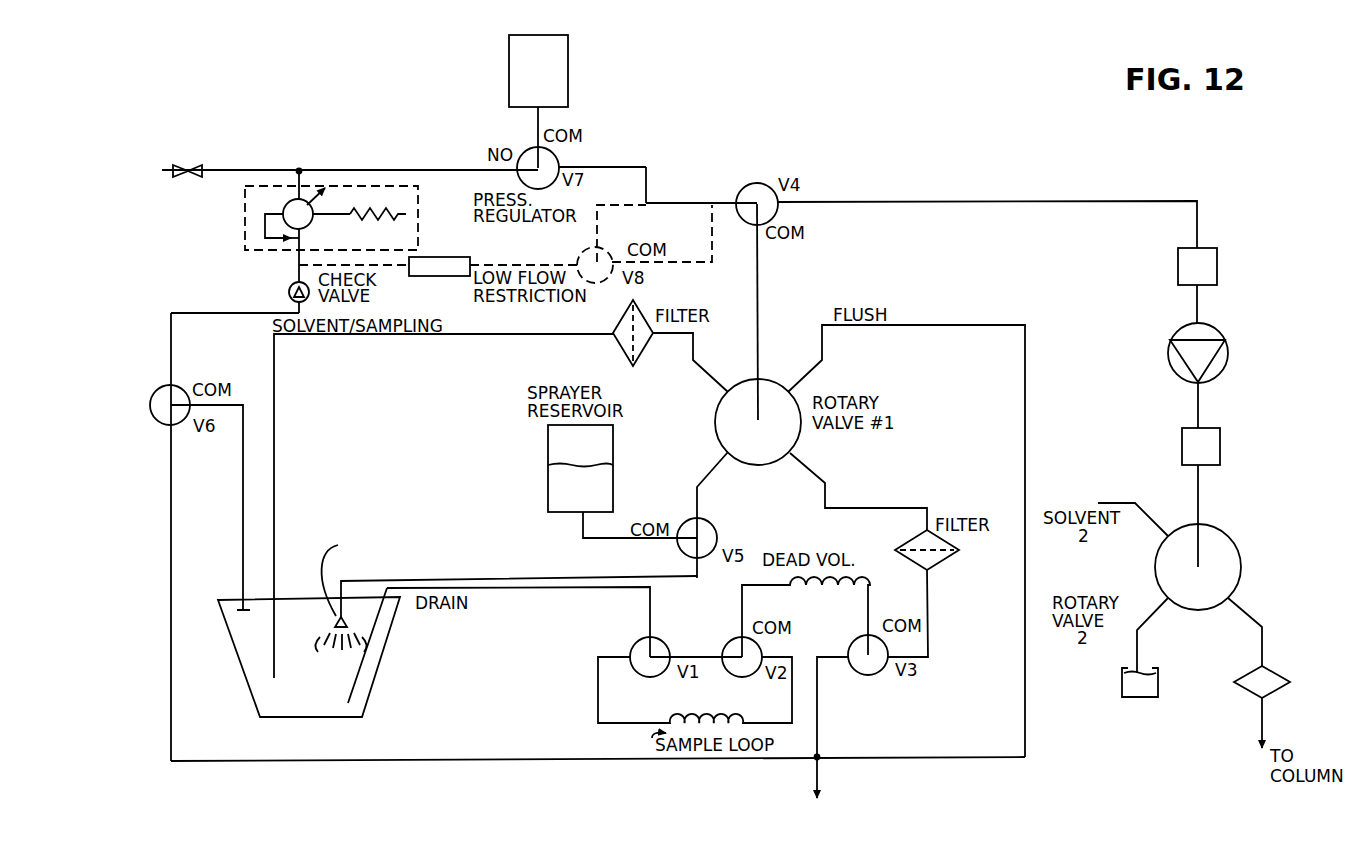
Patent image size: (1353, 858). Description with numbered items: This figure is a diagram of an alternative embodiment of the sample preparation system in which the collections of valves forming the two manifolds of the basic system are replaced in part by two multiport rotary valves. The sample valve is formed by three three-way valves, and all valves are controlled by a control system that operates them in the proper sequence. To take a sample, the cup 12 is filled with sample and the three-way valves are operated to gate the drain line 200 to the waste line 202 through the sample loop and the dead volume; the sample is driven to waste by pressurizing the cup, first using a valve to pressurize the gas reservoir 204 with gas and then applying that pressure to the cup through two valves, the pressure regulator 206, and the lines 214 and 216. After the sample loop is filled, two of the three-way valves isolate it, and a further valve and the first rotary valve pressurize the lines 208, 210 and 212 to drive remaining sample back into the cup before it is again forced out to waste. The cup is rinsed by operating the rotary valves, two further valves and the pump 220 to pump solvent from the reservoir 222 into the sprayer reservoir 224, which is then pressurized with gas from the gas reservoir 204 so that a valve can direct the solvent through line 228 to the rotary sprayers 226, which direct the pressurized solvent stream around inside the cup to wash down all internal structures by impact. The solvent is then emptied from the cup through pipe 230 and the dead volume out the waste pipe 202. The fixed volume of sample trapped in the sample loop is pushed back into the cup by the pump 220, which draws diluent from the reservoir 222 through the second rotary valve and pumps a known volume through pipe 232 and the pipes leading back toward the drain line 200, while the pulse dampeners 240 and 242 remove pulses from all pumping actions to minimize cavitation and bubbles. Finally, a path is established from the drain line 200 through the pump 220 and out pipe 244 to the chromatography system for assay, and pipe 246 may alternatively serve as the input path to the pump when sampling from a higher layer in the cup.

The cup 12 is at (385, 662).
The drain line 200 is at (358, 688).
The waste line 202 is at (817, 773).
The gas reservoir 204 is at (509, 65).
The pressure regulator 206 is at (245, 247).
The line 208 is at (758, 278).
The line 210 is at (846, 508).
The line 212 is at (928, 623).
The line 214 is at (413, 168).
The line 216 is at (243, 519).
The pump 220 is at (1228, 353).
The reservoir 222 is at (1122, 685).
The sprayer reservoir 224 is at (548, 490).
The rotary sprayers 226 is at (332, 632).
The line 228 is at (466, 579).
The pipe 230 is at (714, 653).
The pipe 232 is at (983, 200).
The pulse dampener 240 is at (1178, 265).
The pulse dampener 242 is at (1182, 446).
The pipe 244 is at (1262, 716).
The pipe 246 is at (276, 519).